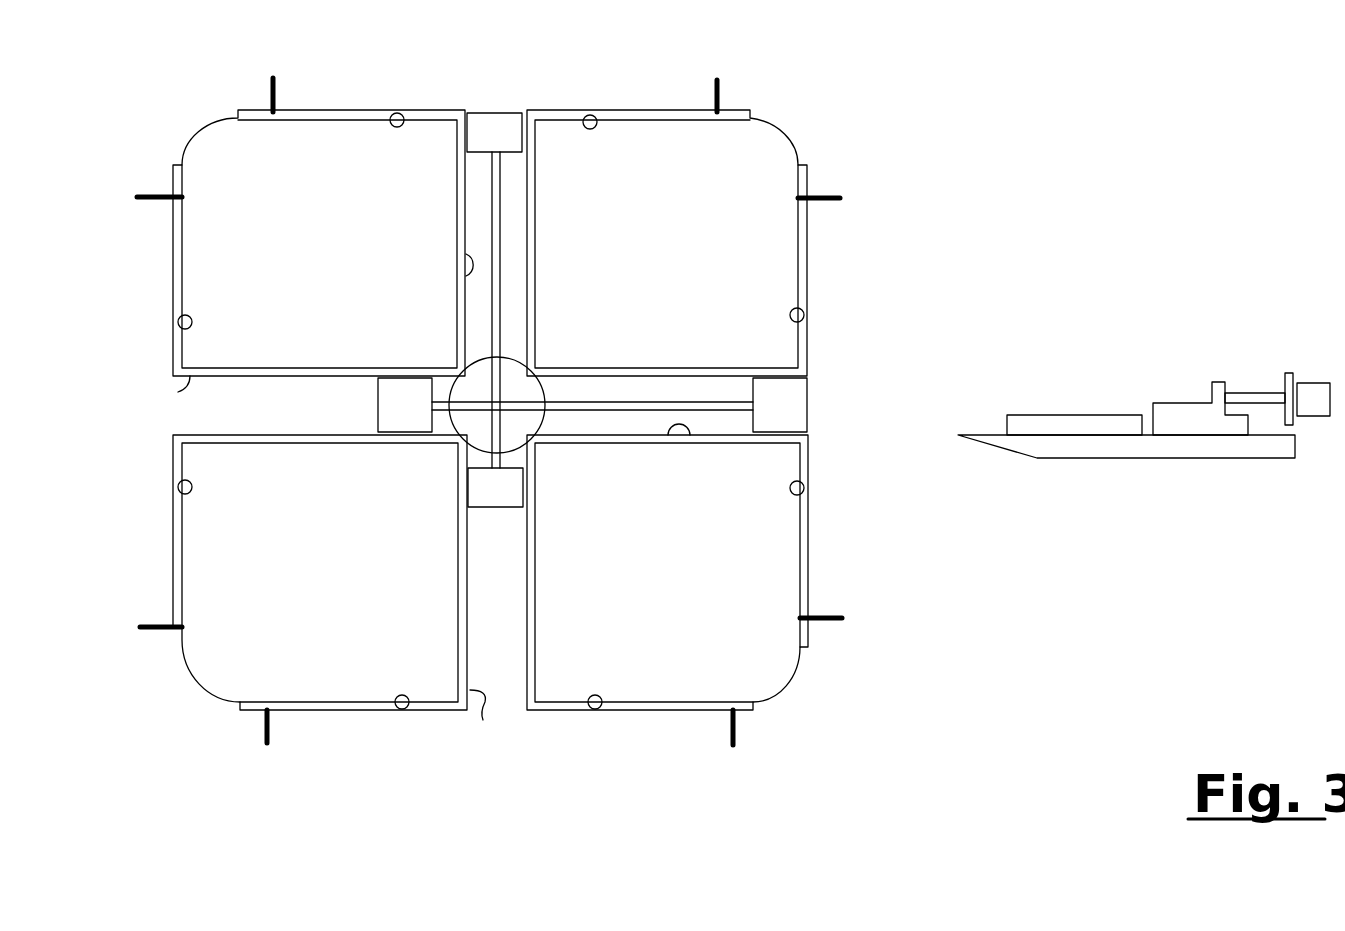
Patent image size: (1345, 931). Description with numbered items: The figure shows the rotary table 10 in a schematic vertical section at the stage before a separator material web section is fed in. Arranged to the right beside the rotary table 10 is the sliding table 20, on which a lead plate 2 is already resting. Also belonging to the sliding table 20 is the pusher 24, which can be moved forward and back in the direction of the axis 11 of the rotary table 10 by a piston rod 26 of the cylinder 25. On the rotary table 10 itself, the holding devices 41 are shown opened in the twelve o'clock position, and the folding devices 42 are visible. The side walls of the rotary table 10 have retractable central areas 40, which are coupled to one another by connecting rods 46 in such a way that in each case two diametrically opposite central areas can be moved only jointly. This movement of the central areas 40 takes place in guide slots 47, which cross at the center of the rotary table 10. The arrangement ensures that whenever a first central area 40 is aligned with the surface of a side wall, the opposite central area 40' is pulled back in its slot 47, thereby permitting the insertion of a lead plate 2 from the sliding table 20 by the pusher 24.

The rotary table 10 is at (185, 668).
The axis 11 is at (528, 375).
The retractable central area 40 is at (684, 247).
The opposite central area 40' is at (393, 474).
The holding device 41 is at (268, 98).
The folding device 42 is at (395, 128).
The connecting rod 46 is at (500, 290).
The guide slot 47 is at (468, 270).
The lead plate 2 is at (1085, 412).
The sliding table 20 is at (1187, 459).
The pusher 24 is at (1165, 400).
The cylinder 25 is at (1312, 382).
The piston rod 26 is at (1250, 392).